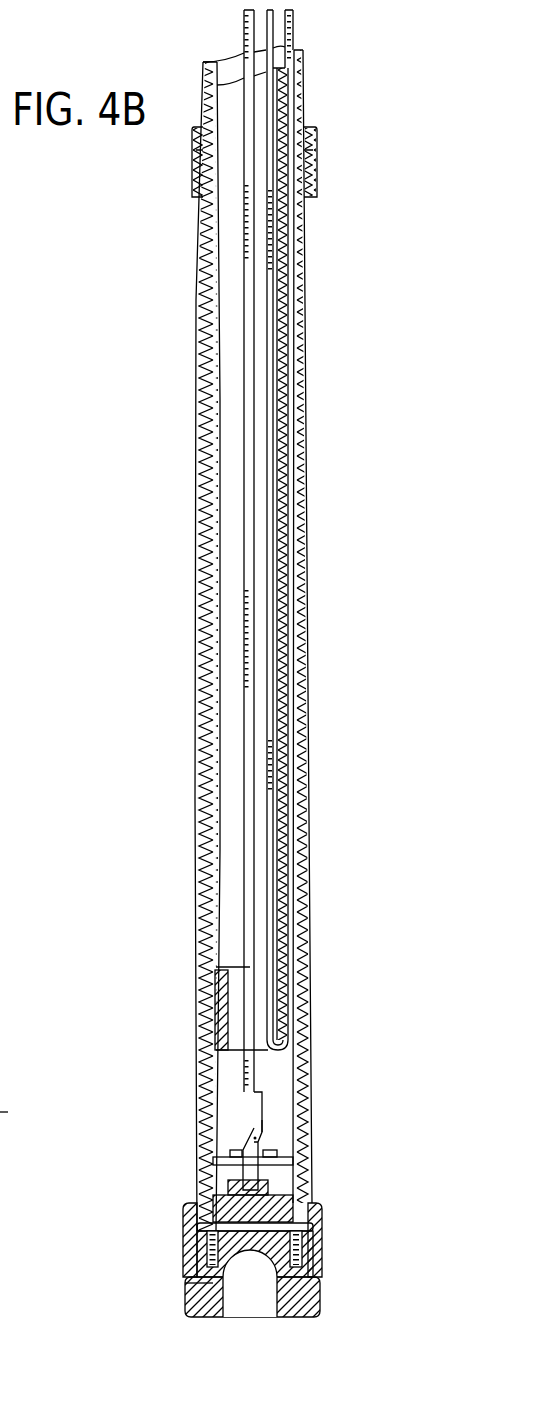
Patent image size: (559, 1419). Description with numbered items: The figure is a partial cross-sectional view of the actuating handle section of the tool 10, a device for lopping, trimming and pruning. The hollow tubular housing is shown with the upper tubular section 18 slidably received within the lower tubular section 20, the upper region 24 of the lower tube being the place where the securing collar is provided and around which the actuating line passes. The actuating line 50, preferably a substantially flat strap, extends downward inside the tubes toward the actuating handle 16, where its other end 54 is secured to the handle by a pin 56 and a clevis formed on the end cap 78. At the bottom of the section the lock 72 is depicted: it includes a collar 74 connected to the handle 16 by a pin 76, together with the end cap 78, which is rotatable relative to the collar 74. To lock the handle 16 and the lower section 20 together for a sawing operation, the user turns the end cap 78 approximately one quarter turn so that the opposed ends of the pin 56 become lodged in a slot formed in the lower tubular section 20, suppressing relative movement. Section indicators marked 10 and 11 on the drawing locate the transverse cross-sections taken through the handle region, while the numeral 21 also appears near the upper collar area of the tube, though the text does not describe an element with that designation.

The tool 10 is at (190, 1166).
The section line 11- 11 is at (120, 1180).
The actuating handle 16 is at (200, 1080).
The upper tubular section 18 is at (228, 585).
The lower tubular section 20 is at (288, 1058).
The top cap 21 is at (203, 142).
The upper region 24 is at (187, 195).
The actuating line 50 is at (287, 700).
The other end 54 is at (262, 1135).
The pin 56 is at (222, 1155).
The lock 72 is at (332, 1252).
The collar 74 is at (188, 1267).
The pin 76 is at (212, 1224).
The end cap 78 is at (235, 1196).